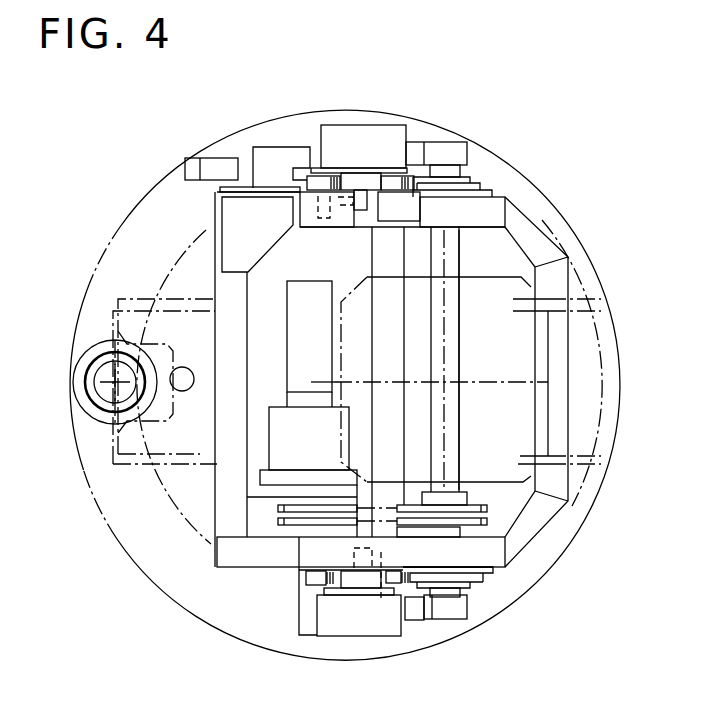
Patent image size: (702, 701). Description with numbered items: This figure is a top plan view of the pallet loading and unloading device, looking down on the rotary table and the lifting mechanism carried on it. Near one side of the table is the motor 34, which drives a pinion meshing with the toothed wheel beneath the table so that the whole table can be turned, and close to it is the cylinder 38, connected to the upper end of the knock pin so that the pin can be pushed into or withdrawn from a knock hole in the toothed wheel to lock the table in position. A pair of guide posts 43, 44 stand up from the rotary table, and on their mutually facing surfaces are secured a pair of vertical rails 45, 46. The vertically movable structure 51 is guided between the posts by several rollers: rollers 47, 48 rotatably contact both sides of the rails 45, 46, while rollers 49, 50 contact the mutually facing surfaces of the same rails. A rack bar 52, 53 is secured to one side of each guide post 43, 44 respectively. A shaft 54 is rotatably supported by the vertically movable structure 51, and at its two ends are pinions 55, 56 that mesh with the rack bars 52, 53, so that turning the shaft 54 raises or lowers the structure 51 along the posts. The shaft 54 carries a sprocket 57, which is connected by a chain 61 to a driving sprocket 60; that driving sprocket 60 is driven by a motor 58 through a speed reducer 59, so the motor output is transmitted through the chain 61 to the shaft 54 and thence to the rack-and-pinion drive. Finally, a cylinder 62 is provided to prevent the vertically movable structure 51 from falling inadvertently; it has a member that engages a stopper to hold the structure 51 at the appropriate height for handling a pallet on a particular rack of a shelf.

The motor 34 is at (93, 367).
The cylinder 38 is at (183, 367).
The guide post 43 is at (361, 625).
The guide post 44 is at (366, 130).
The vertical rail 45 is at (351, 581).
The vertical rail 46 is at (347, 178).
The rollers 47 is at (317, 579).
The rollers 48 is at (317, 180).
The rollers 49 is at (381, 600).
The rollers 50 is at (357, 197).
The vertically movable structure 51 is at (478, 210).
The rack bar 52 is at (414, 608).
The rack bar 53 is at (398, 181).
The shaft 54 is at (462, 402).
The pinion 55 is at (420, 573).
The pinion 56 is at (432, 168).
The sprocket 57 is at (488, 521).
The motor 58 is at (318, 290).
The speed reducer 59 is at (281, 421).
The driving sprocket 60 is at (357, 508).
The chain 61 is at (360, 521).
The cylinder 62 is at (213, 162).